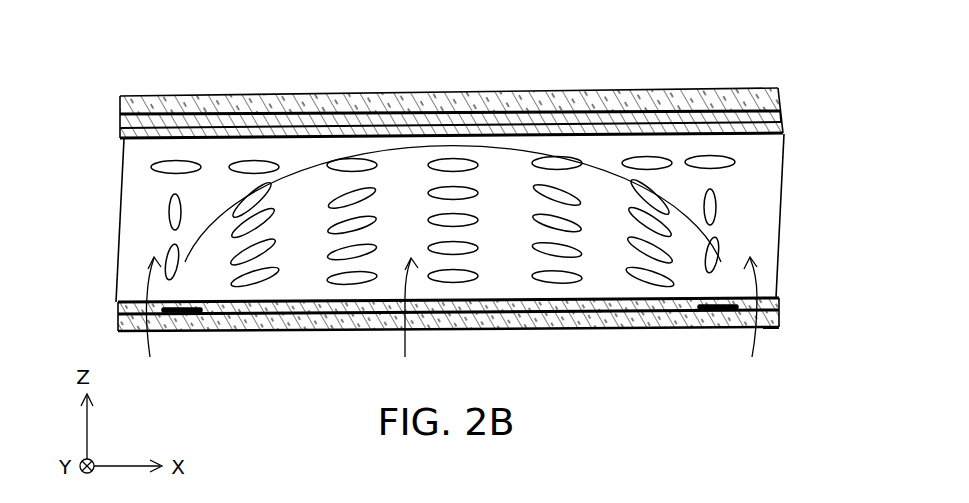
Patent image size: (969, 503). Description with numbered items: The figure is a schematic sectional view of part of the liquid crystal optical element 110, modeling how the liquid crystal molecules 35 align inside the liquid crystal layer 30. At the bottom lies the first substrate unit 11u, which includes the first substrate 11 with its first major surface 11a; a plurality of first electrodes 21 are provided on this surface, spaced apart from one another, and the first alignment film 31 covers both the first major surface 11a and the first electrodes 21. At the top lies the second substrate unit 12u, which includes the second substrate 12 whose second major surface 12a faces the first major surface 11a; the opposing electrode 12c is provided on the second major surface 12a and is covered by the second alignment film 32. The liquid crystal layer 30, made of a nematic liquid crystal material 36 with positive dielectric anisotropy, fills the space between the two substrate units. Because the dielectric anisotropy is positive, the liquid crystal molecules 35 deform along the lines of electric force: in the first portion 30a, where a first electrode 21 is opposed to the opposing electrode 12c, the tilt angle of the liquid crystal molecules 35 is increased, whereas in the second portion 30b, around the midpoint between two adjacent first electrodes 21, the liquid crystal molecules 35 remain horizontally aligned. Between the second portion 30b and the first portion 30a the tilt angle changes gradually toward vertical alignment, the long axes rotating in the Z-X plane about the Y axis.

The liquid crystal optical element 110 is at (576, 91).
The second substrate 12 is at (133, 107).
The second major surface 12a is at (752, 113).
The second substrate unit 12u is at (785, 116).
The opposing electrode 12c is at (133, 123).
The second alignment film 32 is at (133, 132).
The liquid crystal layer 30 is at (113, 221).
The liquid crystal material 36 is at (137, 188).
The liquid crystal molecule 35 is at (712, 207).
The first portion 30a is at (450, 321).
The second portion 30b is at (407, 322).
The first major surface 11a is at (768, 299).
The first alignment film 31 is at (130, 308).
The first electrode 21 is at (183, 314).
The first substrate 11 is at (130, 323).
The first substrate unit 11u is at (784, 317).